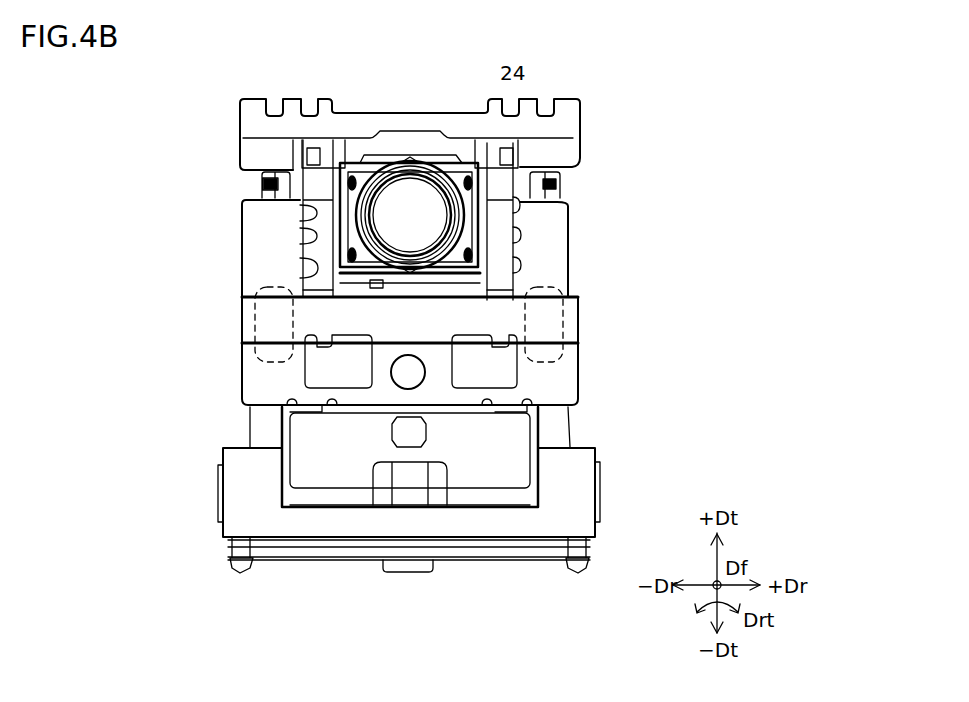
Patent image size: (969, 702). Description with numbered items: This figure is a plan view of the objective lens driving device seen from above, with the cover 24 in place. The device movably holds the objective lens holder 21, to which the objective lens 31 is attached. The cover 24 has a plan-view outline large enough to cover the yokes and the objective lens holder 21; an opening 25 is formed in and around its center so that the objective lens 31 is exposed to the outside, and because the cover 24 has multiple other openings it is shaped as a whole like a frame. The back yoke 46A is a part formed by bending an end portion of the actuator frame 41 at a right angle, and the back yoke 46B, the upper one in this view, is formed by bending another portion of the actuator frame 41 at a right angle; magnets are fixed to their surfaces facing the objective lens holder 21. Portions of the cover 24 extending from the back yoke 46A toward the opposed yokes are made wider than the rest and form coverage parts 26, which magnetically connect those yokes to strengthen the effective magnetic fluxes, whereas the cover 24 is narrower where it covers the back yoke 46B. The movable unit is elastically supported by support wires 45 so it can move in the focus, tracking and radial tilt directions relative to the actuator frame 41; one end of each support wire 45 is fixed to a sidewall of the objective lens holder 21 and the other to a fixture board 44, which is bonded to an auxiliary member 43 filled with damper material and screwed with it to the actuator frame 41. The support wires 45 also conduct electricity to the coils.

The cover 24 is at (411, 220).
The back yoke 46B is at (580, 117).
The objective lens holder 21 is at (272, 194).
The objective lens 31 is at (407, 240).
The opening 25 is at (513, 235).
The coverage parts 26 is at (257, 325).
The back yoke 46A is at (578, 375).
The support wires 45 is at (572, 433).
The actuator frame 41 is at (573, 488).
The auxiliary member 43 is at (310, 522).
The fixture board 44 is at (457, 560).